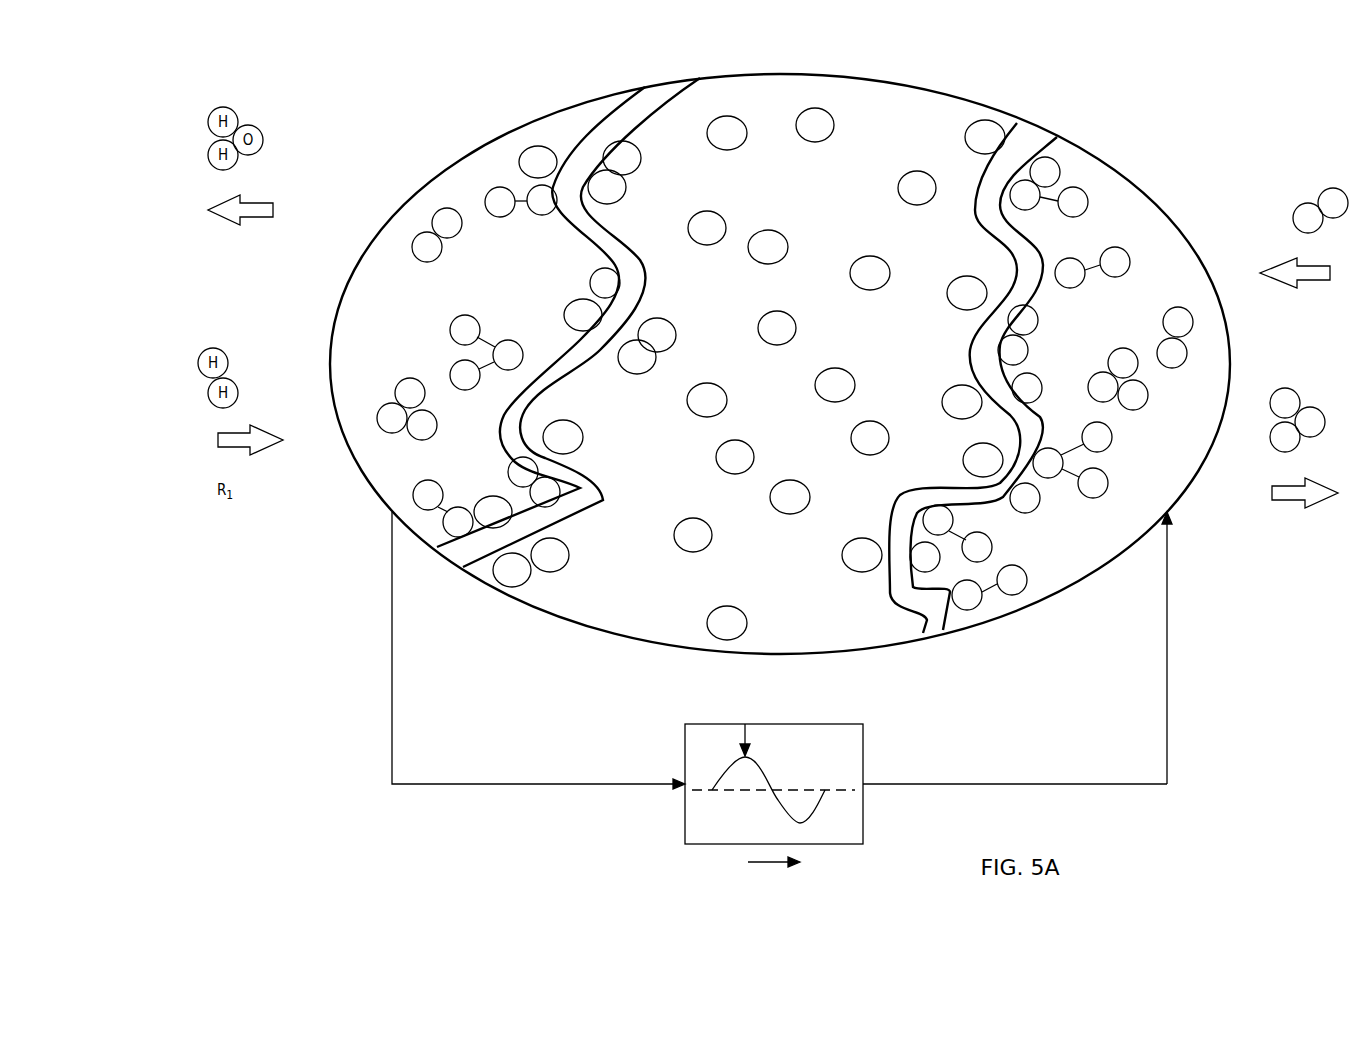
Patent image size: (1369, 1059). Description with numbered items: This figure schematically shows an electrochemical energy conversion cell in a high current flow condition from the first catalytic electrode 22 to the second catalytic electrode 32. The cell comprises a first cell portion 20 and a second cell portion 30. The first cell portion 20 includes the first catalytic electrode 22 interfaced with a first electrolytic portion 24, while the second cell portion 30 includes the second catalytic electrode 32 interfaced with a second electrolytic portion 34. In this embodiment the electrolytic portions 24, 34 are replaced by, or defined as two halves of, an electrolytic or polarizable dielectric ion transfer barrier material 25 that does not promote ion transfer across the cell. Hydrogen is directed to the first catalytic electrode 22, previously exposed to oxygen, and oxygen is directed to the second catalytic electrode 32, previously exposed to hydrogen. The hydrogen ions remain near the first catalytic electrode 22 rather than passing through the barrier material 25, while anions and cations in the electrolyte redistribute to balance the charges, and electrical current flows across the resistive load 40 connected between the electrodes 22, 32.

The first cell portion 20 is at (501, 335).
The first catalytic electrode 22 is at (384, 235).
The first electrolytic portion 24 is at (591, 293).
The ion transfer barrier material 25 is at (933, 104).
The second cell portion 30 is at (1051, 334).
The second catalytic electrode 32 is at (1180, 238).
The second electrolytic portion 34 is at (1002, 351).
The resistive load 40 is at (865, 800).